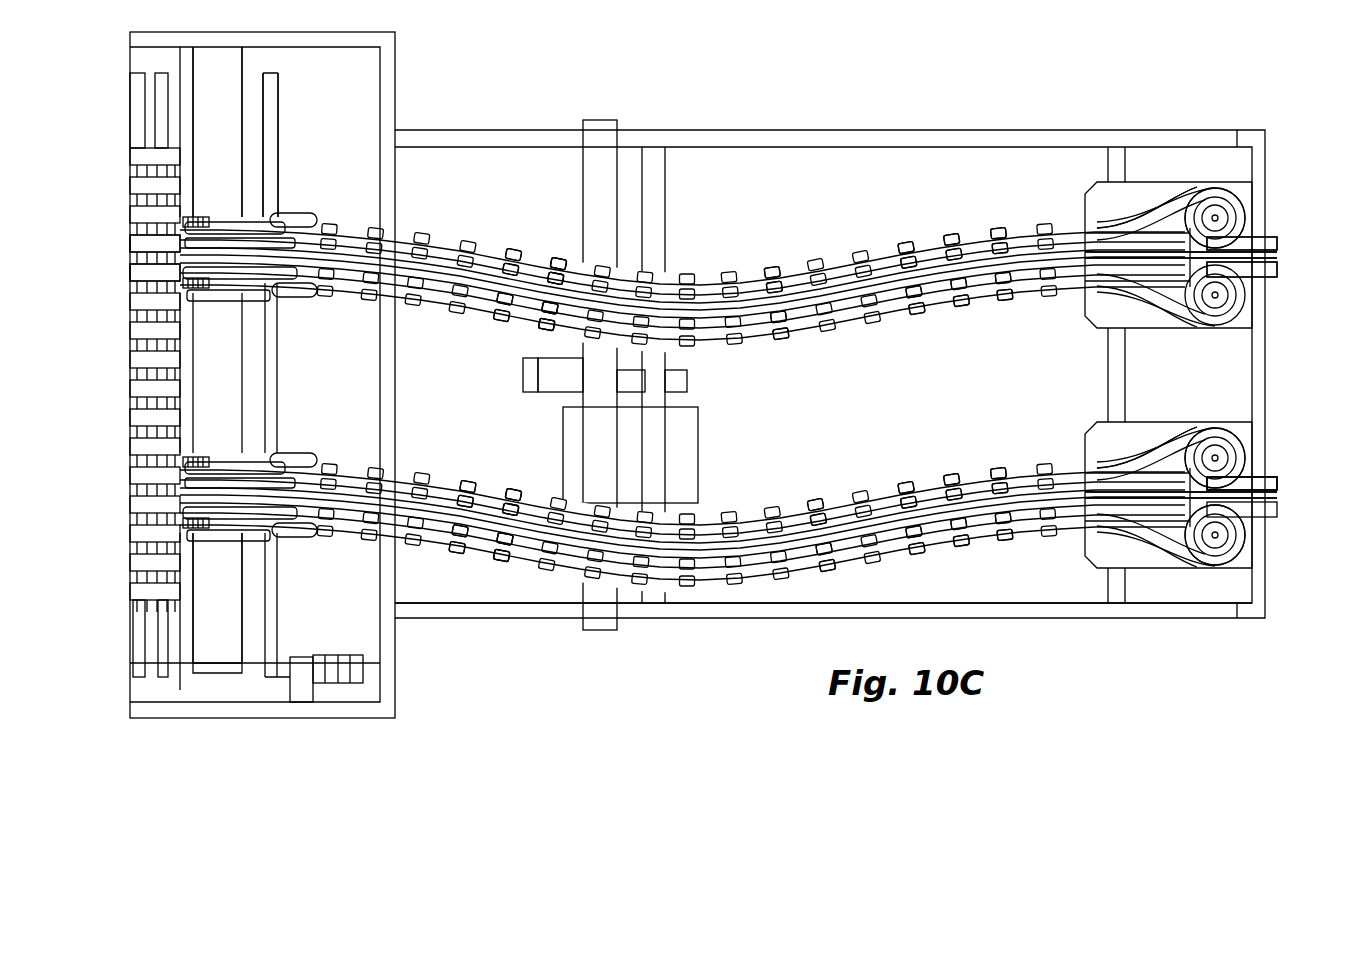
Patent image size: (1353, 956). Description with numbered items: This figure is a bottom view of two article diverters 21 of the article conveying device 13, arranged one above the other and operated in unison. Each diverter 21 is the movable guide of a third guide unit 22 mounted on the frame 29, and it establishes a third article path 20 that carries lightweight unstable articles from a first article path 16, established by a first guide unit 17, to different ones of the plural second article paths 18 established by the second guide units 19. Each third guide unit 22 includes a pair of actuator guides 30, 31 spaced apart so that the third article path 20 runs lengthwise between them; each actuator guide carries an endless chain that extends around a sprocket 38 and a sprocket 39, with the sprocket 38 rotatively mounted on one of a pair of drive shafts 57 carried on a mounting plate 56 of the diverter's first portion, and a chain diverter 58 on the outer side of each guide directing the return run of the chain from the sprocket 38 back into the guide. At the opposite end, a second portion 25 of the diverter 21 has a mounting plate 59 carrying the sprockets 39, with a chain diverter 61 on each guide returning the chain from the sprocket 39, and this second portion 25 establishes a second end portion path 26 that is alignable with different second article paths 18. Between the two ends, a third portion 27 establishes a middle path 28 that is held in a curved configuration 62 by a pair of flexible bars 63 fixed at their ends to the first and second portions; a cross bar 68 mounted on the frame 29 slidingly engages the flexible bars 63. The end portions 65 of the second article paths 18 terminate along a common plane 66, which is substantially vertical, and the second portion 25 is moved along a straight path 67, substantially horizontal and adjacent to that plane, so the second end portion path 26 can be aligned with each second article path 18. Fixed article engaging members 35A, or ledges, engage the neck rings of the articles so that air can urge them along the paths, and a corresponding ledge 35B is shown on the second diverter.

The device 13 is at (785, 100).
The first article path 16 is at (1277, 258).
The first guide unit 17 is at (1280, 240).
The second article paths 18 is at (133, 250).
The second guide units 19 is at (135, 268).
The third article path 20 is at (715, 300).
The article diverter 21 is at (495, 235).
The third guide unit 22 is at (759, 238).
The second portion 25 is at (268, 290).
The second end portion path 26 is at (255, 240).
The third portion 27 is at (928, 265).
The middle path 28 is at (943, 275).
The frame 29 is at (410, 608).
The actuator guide 30 is at (565, 262).
The actuator guide 31 is at (548, 335).
The article engaging members 35A is at (1265, 278).
The bearing 35B is at (1265, 478).
The sprocket 38 is at (1245, 535).
The sprocket 39 is at (203, 530).
The mounting plate 56 is at (1150, 182).
The drive shafts 57 is at (1215, 218).
The chain diverter 58 is at (1130, 215).
The mounting plate 59 is at (205, 210).
The chain diverter 61 is at (245, 230).
The curved configuration 62 is at (800, 275).
The flexible bars 63 is at (985, 255).
The end portions 65 is at (130, 325).
The common plane 66 is at (186, 124).
The straight path 67 is at (210, 340).
The cross bar 68 is at (600, 622).